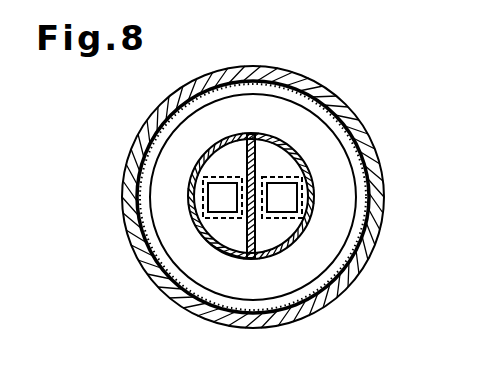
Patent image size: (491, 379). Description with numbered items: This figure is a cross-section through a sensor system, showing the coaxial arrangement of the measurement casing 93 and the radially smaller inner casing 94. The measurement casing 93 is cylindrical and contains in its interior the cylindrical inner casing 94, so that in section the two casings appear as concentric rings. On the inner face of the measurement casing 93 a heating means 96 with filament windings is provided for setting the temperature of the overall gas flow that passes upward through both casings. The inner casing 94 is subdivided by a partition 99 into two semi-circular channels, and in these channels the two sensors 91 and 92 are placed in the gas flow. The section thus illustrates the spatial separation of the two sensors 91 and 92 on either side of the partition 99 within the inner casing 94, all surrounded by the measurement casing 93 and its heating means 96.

The sensor 91 is at (220, 198).
The sensor 92 is at (286, 192).
The measurement casing 93 is at (348, 102).
The inner casing 94 is at (287, 140).
The heating means 96 is at (341, 257).
The partition 99 is at (238, 233).